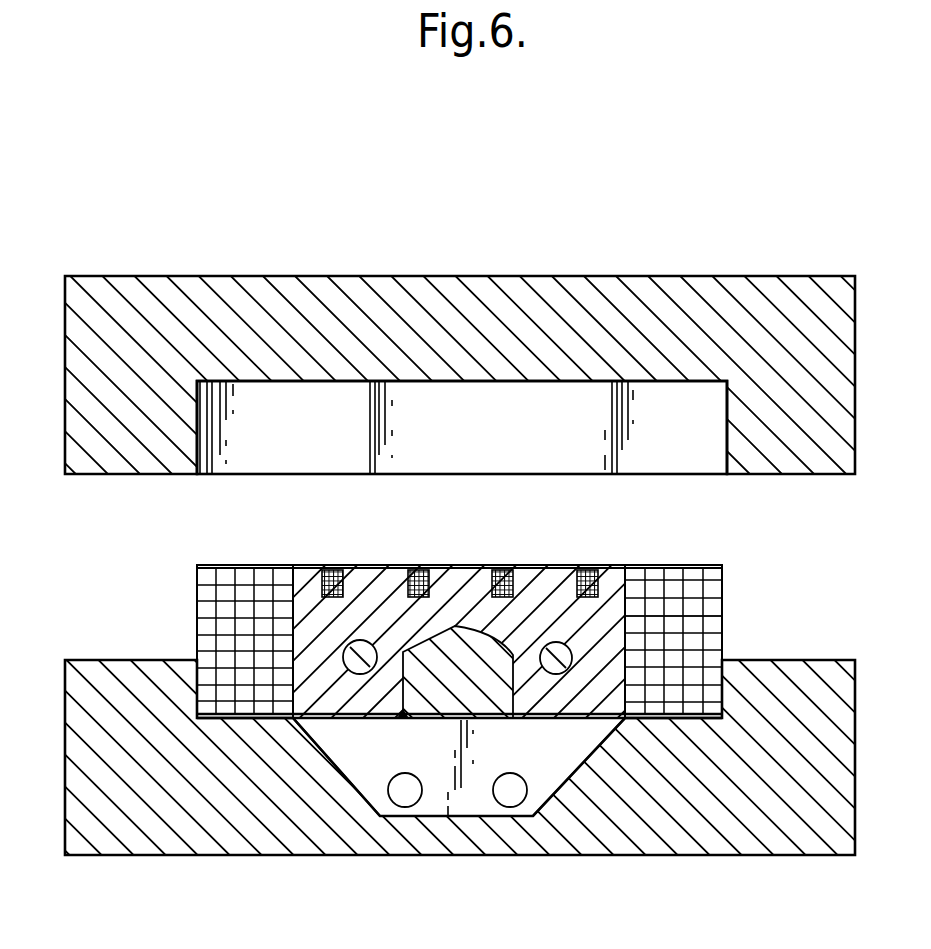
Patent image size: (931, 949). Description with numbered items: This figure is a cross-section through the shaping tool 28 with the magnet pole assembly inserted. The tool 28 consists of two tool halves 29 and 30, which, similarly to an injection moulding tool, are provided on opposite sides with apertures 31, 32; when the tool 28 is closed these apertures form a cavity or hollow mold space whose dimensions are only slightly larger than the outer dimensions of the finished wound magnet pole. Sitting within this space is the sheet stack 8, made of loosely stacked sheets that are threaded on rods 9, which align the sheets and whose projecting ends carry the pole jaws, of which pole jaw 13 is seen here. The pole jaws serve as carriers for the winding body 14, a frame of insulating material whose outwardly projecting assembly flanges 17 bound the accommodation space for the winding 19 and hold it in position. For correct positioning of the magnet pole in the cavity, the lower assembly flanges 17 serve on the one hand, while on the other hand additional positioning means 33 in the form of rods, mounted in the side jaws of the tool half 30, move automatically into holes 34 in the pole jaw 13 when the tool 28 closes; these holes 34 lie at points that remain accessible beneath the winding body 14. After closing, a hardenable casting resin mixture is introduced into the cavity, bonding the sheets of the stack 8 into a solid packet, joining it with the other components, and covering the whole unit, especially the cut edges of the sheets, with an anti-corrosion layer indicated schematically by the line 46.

The shaping tool 28 is at (659, 240).
The tool half 29 is at (122, 440).
The aperture 31 is at (277, 428).
The sheet packet 8 is at (556, 607).
The rods 9 is at (361, 642).
The aperture 32 is at (200, 675).
The assembly flange 17 is at (636, 563).
The winding 19 is at (697, 590).
The winding body 14 is at (625, 622).
The line 46 is at (677, 563).
The tool half 30 is at (140, 818).
The pole jaw 13 is at (555, 765).
The holes 34 is at (402, 792).
The positioning means 33 is at (510, 797).